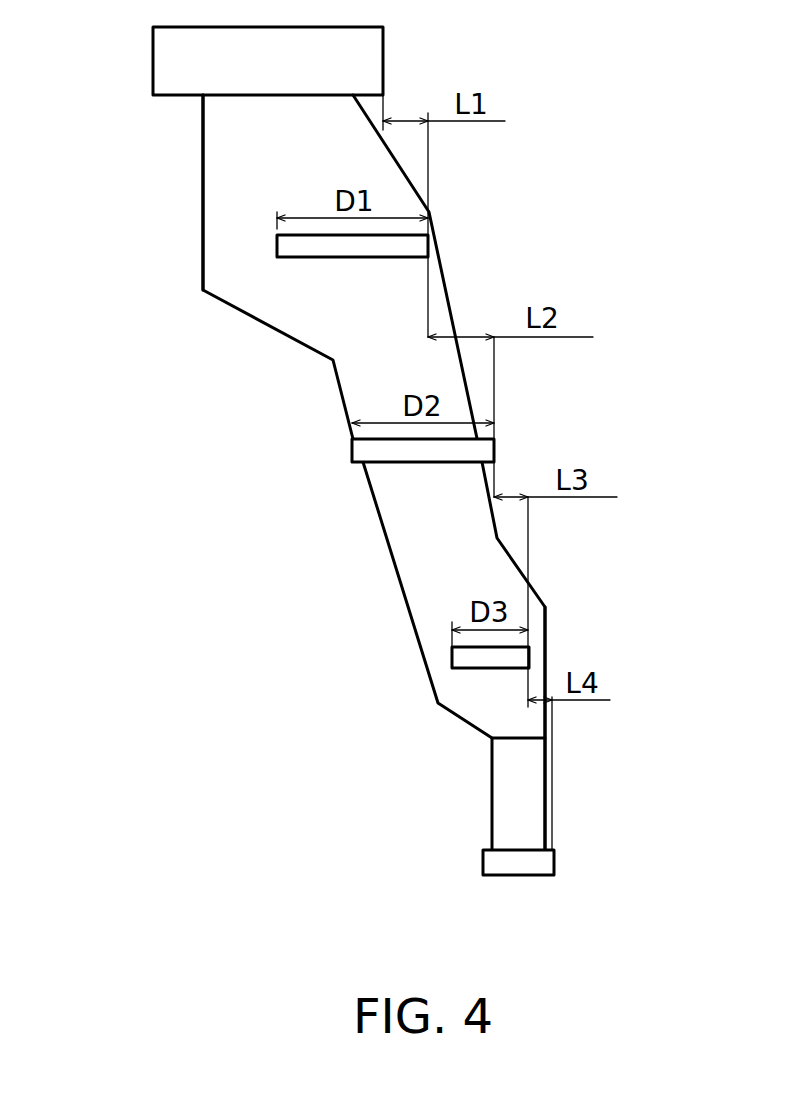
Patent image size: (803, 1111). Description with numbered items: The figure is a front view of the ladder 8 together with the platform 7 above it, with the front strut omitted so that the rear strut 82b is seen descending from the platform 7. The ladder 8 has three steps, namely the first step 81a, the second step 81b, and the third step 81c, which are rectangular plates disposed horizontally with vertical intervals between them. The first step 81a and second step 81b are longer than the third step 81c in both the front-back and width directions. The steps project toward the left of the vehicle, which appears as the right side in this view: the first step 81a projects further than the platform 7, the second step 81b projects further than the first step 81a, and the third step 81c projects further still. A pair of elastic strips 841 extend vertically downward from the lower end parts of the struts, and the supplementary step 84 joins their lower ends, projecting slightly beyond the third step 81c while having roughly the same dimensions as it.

The platform 7 is at (167, 72).
The ladder 8 is at (145, 277).
The rear strut 82b is at (210, 187).
The first step 81a is at (337, 258).
The second step 81b is at (358, 463).
The third step 81c is at (457, 683).
The elastic strips 841 is at (533, 798).
The supplementary step 84 is at (554, 867).